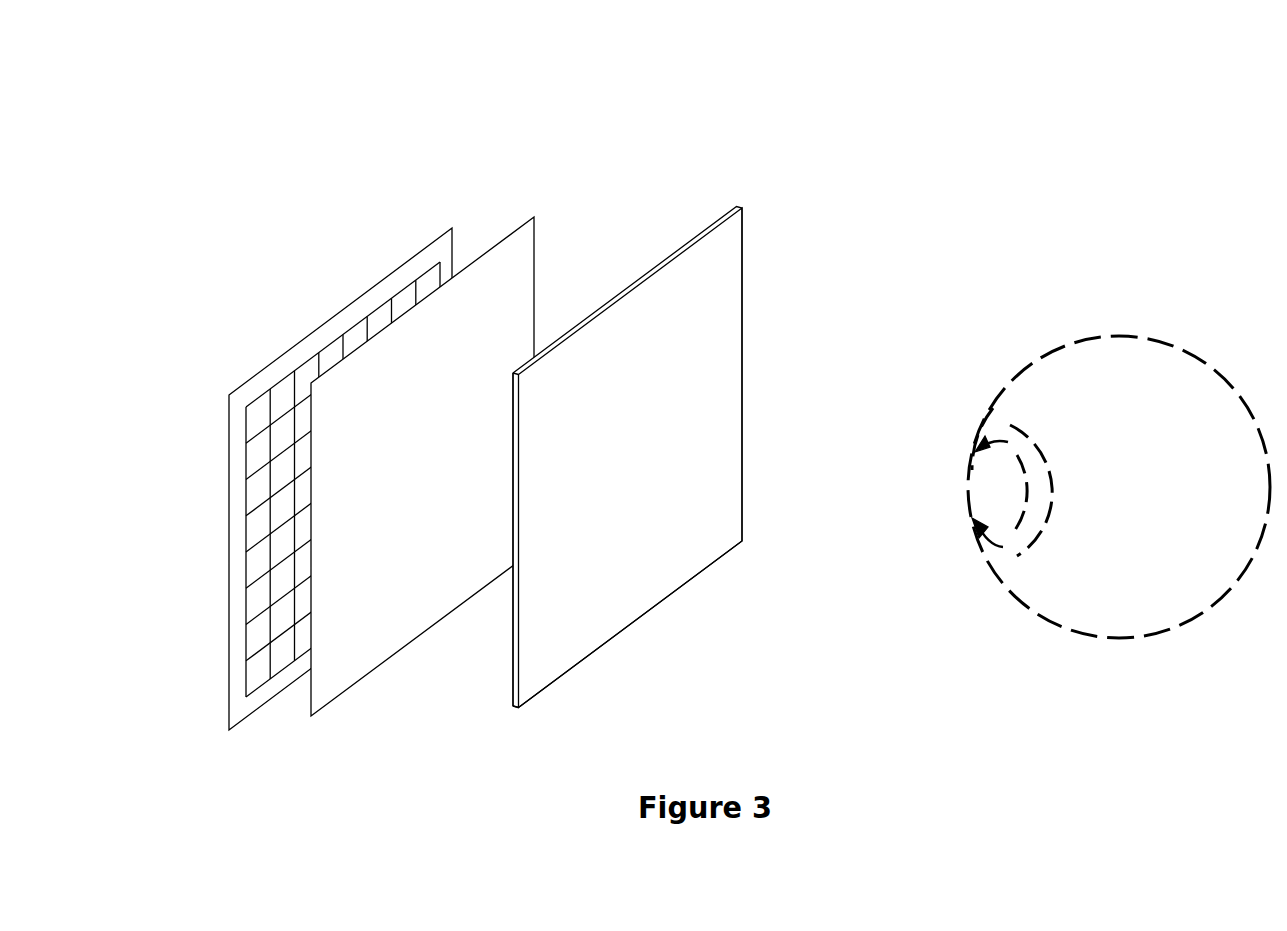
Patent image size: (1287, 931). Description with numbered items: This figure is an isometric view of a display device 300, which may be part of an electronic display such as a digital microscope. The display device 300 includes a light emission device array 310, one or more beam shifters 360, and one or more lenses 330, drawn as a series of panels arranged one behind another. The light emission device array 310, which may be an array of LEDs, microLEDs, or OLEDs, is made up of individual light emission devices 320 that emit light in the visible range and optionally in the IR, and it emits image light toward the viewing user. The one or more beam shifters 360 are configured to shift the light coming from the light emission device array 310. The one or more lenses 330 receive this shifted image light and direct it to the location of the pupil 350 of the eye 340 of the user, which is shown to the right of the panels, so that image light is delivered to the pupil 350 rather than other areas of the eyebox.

The display device 300 is at (342, 124).
The light emission device array 310 is at (228, 537).
The light emission devices 320 is at (352, 327).
The lenses 330 is at (673, 253).
The eye 340 is at (1117, 335).
The pupil 350 is at (1000, 518).
The beam shifters 360 is at (515, 231).